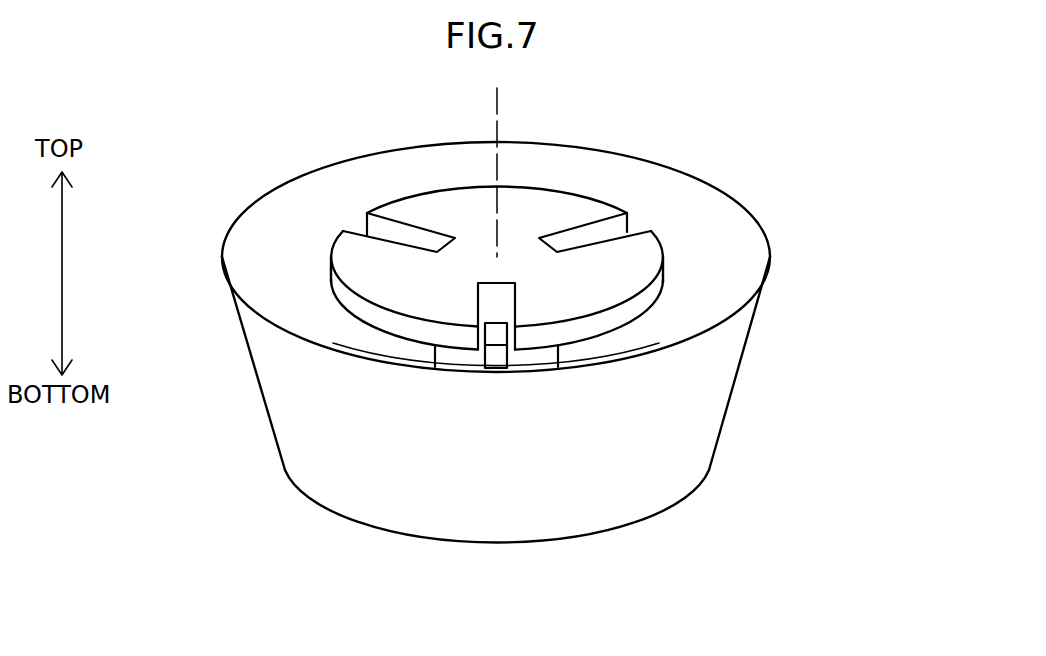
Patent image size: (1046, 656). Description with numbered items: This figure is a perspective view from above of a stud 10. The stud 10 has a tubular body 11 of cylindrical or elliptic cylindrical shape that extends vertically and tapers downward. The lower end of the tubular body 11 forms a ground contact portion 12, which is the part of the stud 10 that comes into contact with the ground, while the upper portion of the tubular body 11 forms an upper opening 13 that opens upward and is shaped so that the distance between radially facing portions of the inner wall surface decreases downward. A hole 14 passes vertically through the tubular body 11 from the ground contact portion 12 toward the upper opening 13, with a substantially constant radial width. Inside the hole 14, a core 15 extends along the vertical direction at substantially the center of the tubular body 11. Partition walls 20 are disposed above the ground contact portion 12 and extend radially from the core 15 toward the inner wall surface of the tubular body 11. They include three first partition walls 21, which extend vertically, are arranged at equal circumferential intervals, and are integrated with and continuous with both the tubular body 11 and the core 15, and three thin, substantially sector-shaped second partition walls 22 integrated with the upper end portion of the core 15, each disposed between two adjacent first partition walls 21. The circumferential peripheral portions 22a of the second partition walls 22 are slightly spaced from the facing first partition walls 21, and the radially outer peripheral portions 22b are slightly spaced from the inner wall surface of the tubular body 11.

The stud 10 is at (847, 228).
The tubular body 11 is at (703, 403).
The ground contact portion 12 is at (402, 533).
The upper opening 13 is at (733, 227).
The hole 14 is at (327, 327).
The core 15 is at (540, 240).
The partition walls 20 is at (487, 344).
The first partition wall 21 is at (507, 357).
The second partition wall 22 is at (403, 196).
The peripheral portions 22a is at (377, 227).
The radially outer peripheral portions 22b is at (460, 188).